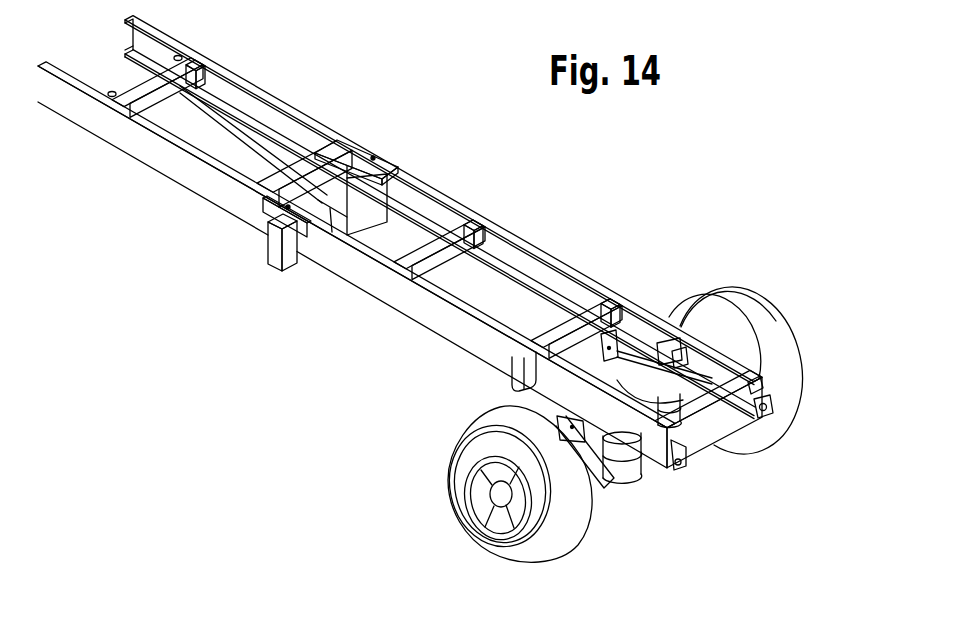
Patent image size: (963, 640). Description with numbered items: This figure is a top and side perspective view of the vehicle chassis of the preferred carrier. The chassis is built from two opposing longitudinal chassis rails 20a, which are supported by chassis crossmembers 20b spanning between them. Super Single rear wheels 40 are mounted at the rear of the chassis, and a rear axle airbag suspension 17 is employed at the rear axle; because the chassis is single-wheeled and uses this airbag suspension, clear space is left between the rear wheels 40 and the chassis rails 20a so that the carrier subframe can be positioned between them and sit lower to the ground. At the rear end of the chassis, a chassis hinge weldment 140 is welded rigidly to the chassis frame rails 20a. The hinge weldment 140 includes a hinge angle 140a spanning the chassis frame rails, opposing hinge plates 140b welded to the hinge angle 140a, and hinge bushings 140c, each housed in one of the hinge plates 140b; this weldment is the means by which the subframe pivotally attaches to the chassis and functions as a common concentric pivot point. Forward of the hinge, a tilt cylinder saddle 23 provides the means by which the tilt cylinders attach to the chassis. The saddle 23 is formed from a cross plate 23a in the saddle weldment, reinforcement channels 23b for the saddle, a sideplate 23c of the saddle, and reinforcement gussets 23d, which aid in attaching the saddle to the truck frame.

The longitudinal chassis rails 20a is at (453, 204).
The chassis crossmembers 20b is at (133, 75).
The tilt cylinder saddle 23 is at (284, 279).
The cross plate 23a is at (369, 160).
The reinforcement channels 23b is at (377, 158).
The sideplate 23c is at (370, 184).
The reinforcement gussets 23d is at (277, 233).
The rear axle airbag suspension 17 is at (634, 478).
The rear wheels 40 is at (747, 310).
The chassis hinge weldment 140 is at (665, 485).
The hinge angle 140a is at (708, 457).
The hinge plates 140b is at (753, 390).
The hinge bushings 140c is at (766, 409).